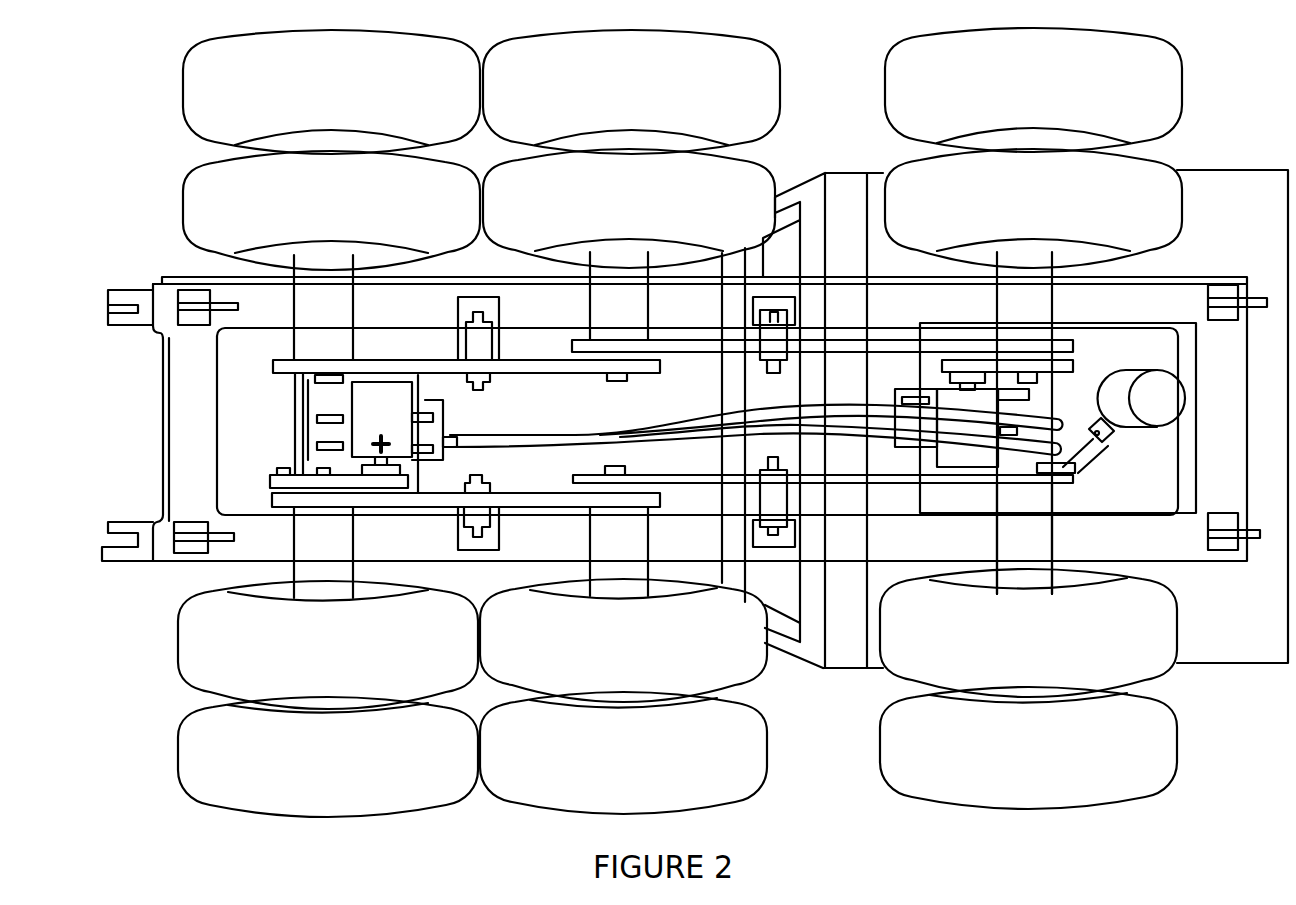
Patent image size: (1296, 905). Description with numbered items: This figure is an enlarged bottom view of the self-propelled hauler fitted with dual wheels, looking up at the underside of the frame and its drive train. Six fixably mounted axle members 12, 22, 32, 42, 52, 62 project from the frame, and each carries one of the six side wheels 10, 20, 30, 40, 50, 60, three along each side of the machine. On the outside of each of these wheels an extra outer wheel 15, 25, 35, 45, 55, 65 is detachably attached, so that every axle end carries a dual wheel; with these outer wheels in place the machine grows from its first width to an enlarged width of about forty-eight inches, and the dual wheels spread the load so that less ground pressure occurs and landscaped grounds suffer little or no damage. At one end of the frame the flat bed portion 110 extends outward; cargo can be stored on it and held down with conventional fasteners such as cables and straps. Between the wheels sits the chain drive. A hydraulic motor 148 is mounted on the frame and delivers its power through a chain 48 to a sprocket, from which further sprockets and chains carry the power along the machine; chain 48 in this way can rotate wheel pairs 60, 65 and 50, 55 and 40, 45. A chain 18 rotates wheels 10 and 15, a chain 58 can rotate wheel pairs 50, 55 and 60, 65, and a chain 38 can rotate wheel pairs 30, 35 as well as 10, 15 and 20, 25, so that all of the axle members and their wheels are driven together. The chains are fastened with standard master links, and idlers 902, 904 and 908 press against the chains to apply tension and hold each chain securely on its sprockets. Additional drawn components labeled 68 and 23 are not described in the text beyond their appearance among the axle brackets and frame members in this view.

The side wheel 10 is at (306, 230).
The extra outer wheel 15 is at (306, 117).
The side wheel 20 is at (608, 227).
The extra outer wheel 25 is at (611, 117).
The side wheel 30 is at (1019, 227).
The extra outer wheel 35 is at (1019, 117).
The side wheel 40 is at (1006, 670).
The extra outer wheel 45 is at (1011, 787).
The side wheel 50 is at (606, 677).
The extra outer wheel 55 is at (608, 787).
The side wheel 60 is at (306, 687).
The extra outer wheel 65 is at (308, 787).
The axle member 12 is at (320, 307).
The axle member 22 is at (610, 312).
The axle member 32 is at (1017, 312).
The axle member 42 is at (1022, 558).
The axle member 52 is at (617, 545).
The axle member 62 is at (313, 543).
The chain 18 is at (403, 368).
The chain 48 is at (277, 481).
The chain 58 is at (676, 480).
The axle support plate 68 is at (378, 506).
The hydraulic motor 148 is at (387, 423).
The center frame bracket 23 is at (837, 348).
The chain 38 is at (1075, 364).
The idler 902 is at (478, 345).
The idler 904 is at (497, 486).
The idler 908 is at (768, 508).
The flat bed portion 110 is at (1198, 170).